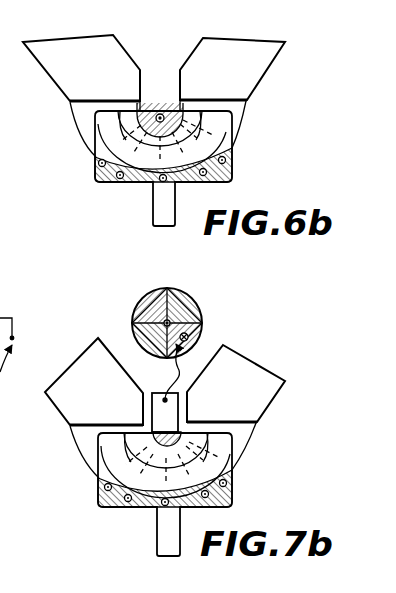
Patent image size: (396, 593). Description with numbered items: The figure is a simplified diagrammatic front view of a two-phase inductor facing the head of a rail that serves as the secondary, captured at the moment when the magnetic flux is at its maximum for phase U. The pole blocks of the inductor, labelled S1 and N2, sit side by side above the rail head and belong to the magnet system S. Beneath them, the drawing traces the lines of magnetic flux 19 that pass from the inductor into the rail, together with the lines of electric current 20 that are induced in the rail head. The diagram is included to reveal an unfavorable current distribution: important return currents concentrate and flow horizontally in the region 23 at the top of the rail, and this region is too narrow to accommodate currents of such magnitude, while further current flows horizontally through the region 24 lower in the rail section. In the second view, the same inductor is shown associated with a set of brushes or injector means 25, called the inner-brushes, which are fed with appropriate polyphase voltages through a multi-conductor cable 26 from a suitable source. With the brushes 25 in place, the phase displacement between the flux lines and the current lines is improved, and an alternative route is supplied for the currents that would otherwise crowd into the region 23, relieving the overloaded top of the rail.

In FIG. 6B, the lines of magnetic flux 19 is at (237, 113).
In FIG. 6B, the lines of electric current 20 is at (228, 143).
In FIG. 6B, the region 23 is at (166, 104).
In FIG. 6B, the region 24 is at (220, 187).
In FIG. 7B, the region 24 is at (196, 508).
In FIG. 7B, the brushes 25 is at (151, 386).
In FIG. 7B, the multi-conductor cable 26 is at (147, 286).
In FIG. 6B, the magnet system S is at (98, 187).
In FIG. 7B, the magnet system S is at (99, 511).
In FIG. 6B, the south pole magnet S1 is at (81, 68).
In FIG. 7B, the south pole magnet S1 is at (94, 381).
In FIG. 6B, the north pole magnet N2 is at (232, 69).
In FIG. 7B, the north pole magnet N2 is at (236, 383).